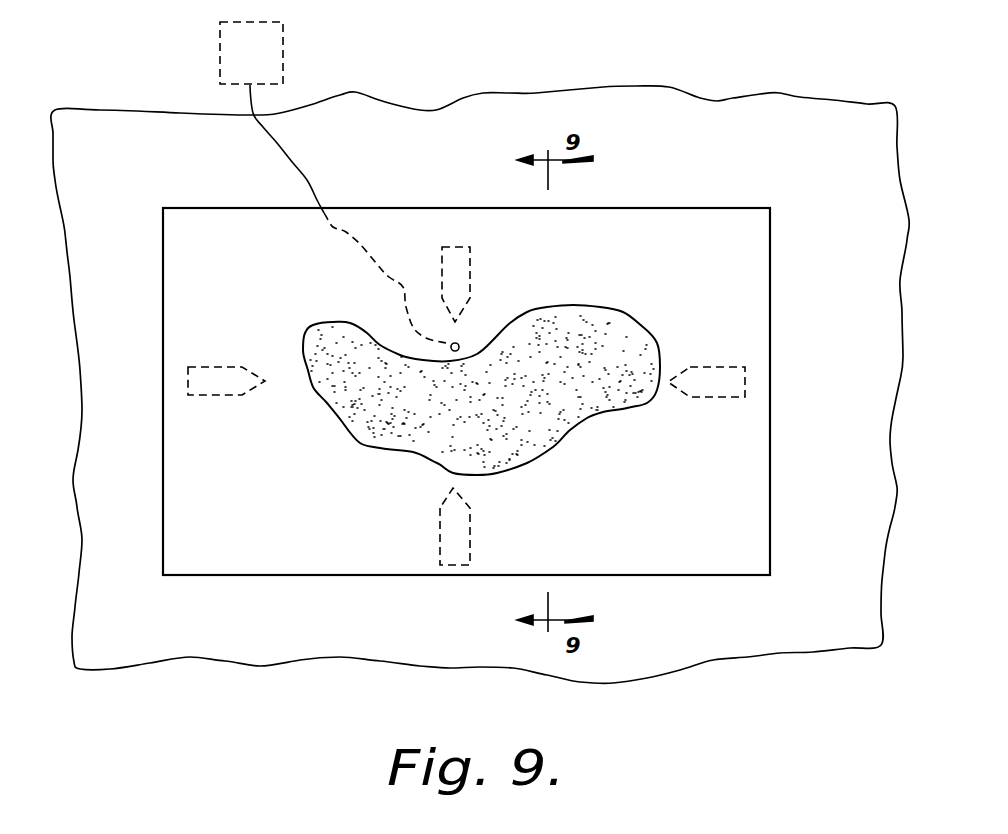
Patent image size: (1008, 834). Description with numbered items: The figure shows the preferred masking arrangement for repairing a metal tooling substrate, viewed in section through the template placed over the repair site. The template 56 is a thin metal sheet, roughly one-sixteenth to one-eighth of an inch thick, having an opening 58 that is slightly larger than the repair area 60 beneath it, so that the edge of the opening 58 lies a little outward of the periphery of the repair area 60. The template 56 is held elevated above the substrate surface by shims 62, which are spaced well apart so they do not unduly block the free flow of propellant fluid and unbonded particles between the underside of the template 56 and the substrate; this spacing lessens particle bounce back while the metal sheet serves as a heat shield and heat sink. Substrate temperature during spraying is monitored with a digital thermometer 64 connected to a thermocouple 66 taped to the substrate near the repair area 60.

The template 56 is at (772, 242).
The opening 58 is at (638, 307).
The repair area 60 is at (567, 413).
The shims 62 is at (442, 265).
The digital thermometer 64 is at (220, 40).
The thermocouple 66 is at (463, 343).